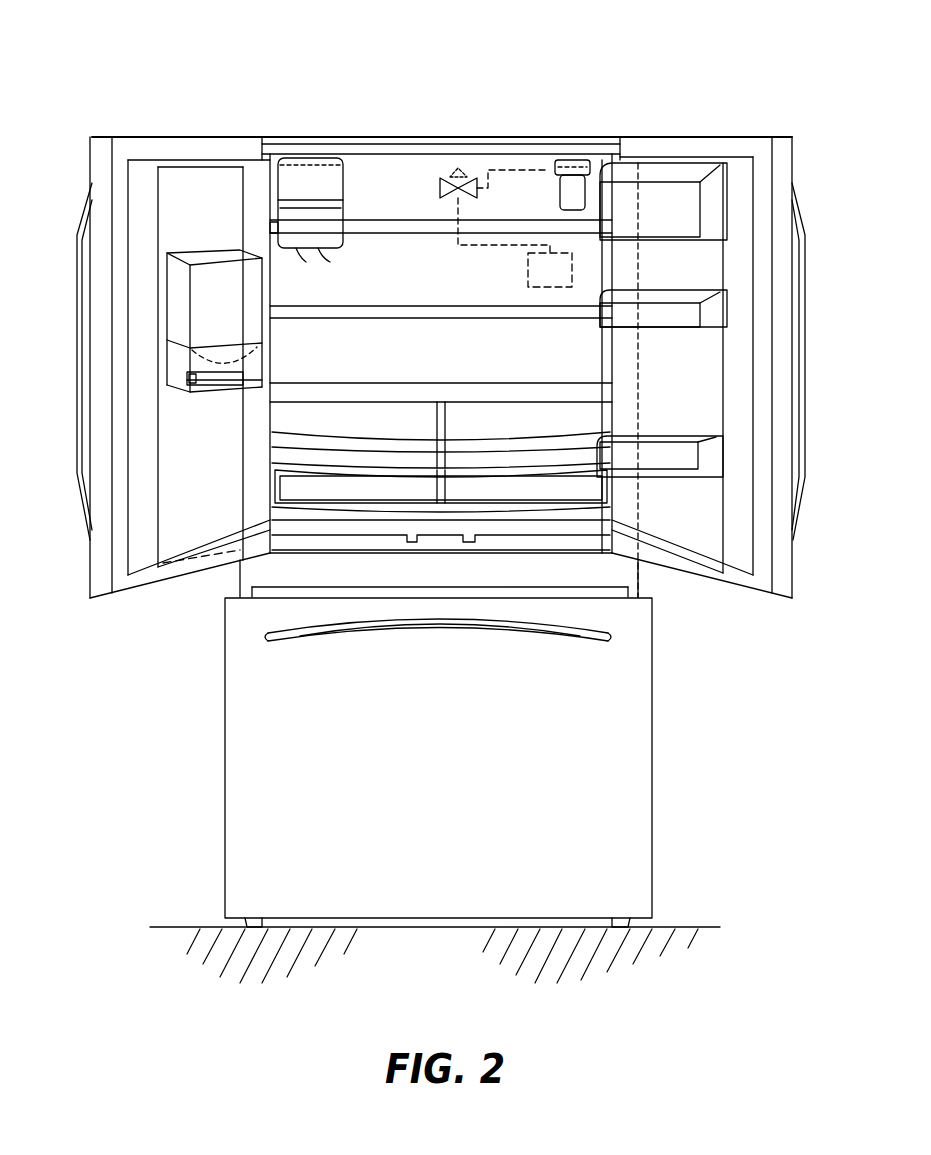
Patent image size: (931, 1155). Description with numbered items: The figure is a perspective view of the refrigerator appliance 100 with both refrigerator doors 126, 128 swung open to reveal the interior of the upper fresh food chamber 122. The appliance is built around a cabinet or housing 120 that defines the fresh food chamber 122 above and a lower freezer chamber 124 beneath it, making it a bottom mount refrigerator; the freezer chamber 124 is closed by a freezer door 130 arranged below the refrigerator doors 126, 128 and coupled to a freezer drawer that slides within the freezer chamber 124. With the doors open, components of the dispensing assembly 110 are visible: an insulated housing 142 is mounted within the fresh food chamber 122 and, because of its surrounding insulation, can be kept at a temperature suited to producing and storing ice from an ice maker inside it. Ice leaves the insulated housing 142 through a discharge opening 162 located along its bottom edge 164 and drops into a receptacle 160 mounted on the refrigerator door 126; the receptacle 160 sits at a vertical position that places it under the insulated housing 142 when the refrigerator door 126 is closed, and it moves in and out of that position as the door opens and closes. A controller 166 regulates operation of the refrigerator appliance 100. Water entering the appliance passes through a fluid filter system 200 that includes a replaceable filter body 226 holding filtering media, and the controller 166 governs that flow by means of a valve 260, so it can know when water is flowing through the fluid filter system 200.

The refrigerator appliance 100 is at (442, 69).
The dispensing assembly 110 is at (257, 198).
The housing 120 is at (225, 830).
The fresh food chamber 122 is at (393, 181).
The freezer chamber 124 is at (621, 708).
The refrigerator door 126 is at (140, 137).
The refrigerator door 128 is at (697, 133).
The freezer door 130 is at (613, 805).
The insulated housing 142 is at (310, 178).
The receptacle 160 is at (213, 280).
The discharge opening 162 is at (318, 255).
The bottom edge 164 is at (303, 257).
The controller 166 is at (528, 270).
The fluid filter system 200 is at (544, 184).
The filter body 226 is at (575, 185).
The valve 260 is at (443, 162).